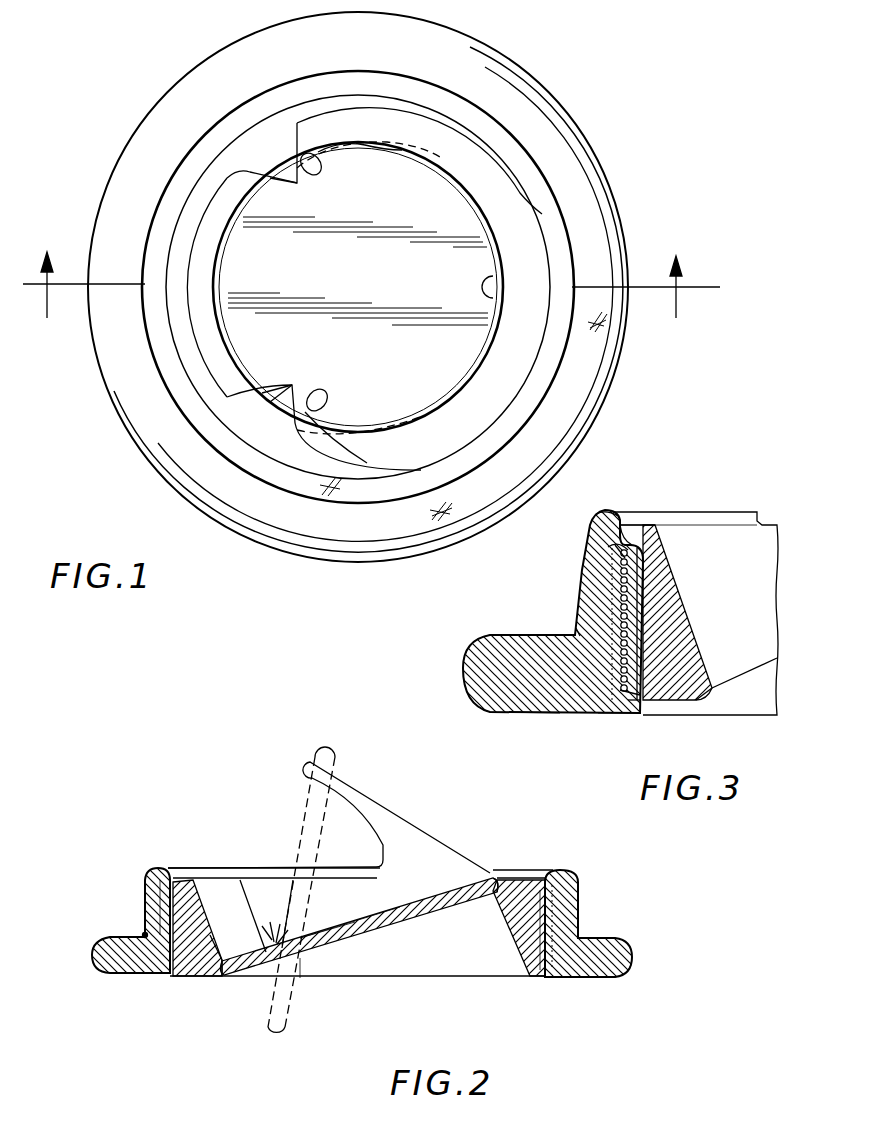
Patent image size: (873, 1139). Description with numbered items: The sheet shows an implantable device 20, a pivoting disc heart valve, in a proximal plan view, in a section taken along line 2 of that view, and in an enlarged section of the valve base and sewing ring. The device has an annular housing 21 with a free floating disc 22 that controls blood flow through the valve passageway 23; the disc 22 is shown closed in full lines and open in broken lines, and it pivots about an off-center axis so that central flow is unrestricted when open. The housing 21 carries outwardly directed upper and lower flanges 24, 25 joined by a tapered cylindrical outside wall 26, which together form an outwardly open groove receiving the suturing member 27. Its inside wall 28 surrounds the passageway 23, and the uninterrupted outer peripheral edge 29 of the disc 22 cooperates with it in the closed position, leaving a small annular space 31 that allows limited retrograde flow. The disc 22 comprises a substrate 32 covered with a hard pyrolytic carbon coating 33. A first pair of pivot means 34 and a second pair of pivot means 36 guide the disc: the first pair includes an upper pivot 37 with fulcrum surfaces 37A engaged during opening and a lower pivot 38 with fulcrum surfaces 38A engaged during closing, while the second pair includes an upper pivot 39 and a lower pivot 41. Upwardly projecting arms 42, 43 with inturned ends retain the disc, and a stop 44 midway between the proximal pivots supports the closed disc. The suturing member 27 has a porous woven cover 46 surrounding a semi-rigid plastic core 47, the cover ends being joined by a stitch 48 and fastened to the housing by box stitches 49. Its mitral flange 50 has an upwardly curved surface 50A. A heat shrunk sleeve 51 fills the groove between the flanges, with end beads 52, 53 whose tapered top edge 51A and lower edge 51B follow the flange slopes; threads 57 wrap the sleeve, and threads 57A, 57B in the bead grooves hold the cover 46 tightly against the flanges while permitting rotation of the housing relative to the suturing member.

In FIG. 1, the section line 2— 2 is at (367, 291).
In FIG. 1, the implantable device 20 is at (168, 75).
In FIG. 2, the implantable device 20 is at (206, 828).
In FIG. 1, the annular housing 21 is at (514, 163).
In FIG. 3, the annular housing 21 is at (764, 521).
In FIG. 1, the disc 22 is at (358, 287).
In FIG. 2, the disc 22 is at (323, 740).
In FIG. 2, the valve passageway 23 is at (415, 951).
In FIG. 3, the upper flange 24 is at (630, 530).
In FIG. 2, the upper flange 24 is at (556, 869).
In FIG. 3, the lower flange 25 is at (625, 694).
In FIG. 2, the lower flange 25 is at (554, 978).
In FIG. 3, the outside wall 26 is at (658, 583).
In FIG. 2, the outside wall 26 is at (523, 933).
In FIG. 1, the suturing member 27 is at (622, 205).
In FIG. 3, the suturing member 27 is at (452, 654).
In FIG. 2, the suturing member 27 is at (632, 928).
In FIG. 3, the inside wall 28 is at (641, 548).
In FIG. 2, the inside wall 28 is at (200, 880).
In FIG. 2, the outer peripheral edge 29 is at (224, 964).
In FIG. 2, the annular space 31 is at (217, 967).
In FIG. 2, the substrate 32 is at (432, 898).
In FIG. 2, the coating 33 is at (383, 912).
In FIG. 1, the first pair of pivot means 34 is at (305, 198).
In FIG. 1, the second pair of pivot means 36 is at (311, 376).
In FIG. 1, the upper pivot 37 is at (283, 176).
In FIG. 2, the upper pivot 37 is at (272, 883).
In FIG. 2, the fulcrum surfaces 37A is at (271, 922).
In FIG. 1, the lower pivot 38 is at (318, 175).
In FIG. 2, the lower pivot 38 is at (340, 930).
In FIG. 2, the fulcrum surfaces 38A is at (300, 958).
In FIG. 1, the upper pivot 39 is at (283, 396).
In FIG. 1, the lower pivot 41 is at (330, 392).
In FIG. 1, the arm 42 is at (338, 156).
In FIG. 2, the arm 42 is at (350, 788).
In FIG. 1, the arm 43 is at (330, 412).
In FIG. 1, the stop 44 is at (454, 291).
In FIG. 2, the stop 44 is at (493, 893).
In FIG. 1, the cover 46 is at (576, 383).
In FIG. 3, the cover 46 is at (520, 640).
In FIG. 2, the cover 46 is at (578, 913).
In FIG. 3, the core 47 is at (508, 685).
In FIG. 2, the core 47 is at (618, 963).
In FIG. 3, the stitch 48 is at (578, 635).
In FIG. 2, the stitch 48 is at (145, 935).
In FIG. 3, the box stitches 49 is at (645, 628).
In FIG. 3, the flange 50 is at (470, 665).
In FIG. 2, the flange 50 is at (93, 953).
In FIG. 3, the upwardly curved surface 50A is at (500, 700).
In FIG. 2, the upwardly curved surface 50A is at (127, 972).
In FIG. 3, the sleeve 51 is at (641, 653).
In FIG. 2, the sleeve 51 is at (147, 913).
In FIG. 3, the top edge 51A is at (604, 510).
In FIG. 3, the lower edge 51B is at (632, 702).
In FIG. 3, the end bead 52 is at (630, 541).
In FIG. 3, the end bead 53 is at (624, 683).
In FIG. 3, the threads 57 is at (622, 591).
In FIG. 2, the threads 57 is at (564, 920).
In FIG. 3, the thread 57A is at (620, 558).
In FIG. 3, the thread 57B is at (606, 715).